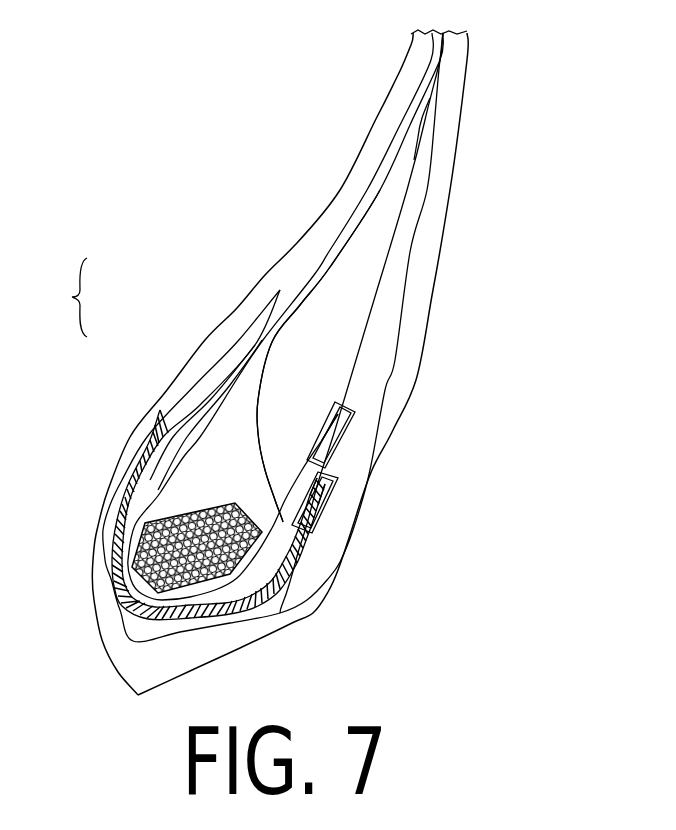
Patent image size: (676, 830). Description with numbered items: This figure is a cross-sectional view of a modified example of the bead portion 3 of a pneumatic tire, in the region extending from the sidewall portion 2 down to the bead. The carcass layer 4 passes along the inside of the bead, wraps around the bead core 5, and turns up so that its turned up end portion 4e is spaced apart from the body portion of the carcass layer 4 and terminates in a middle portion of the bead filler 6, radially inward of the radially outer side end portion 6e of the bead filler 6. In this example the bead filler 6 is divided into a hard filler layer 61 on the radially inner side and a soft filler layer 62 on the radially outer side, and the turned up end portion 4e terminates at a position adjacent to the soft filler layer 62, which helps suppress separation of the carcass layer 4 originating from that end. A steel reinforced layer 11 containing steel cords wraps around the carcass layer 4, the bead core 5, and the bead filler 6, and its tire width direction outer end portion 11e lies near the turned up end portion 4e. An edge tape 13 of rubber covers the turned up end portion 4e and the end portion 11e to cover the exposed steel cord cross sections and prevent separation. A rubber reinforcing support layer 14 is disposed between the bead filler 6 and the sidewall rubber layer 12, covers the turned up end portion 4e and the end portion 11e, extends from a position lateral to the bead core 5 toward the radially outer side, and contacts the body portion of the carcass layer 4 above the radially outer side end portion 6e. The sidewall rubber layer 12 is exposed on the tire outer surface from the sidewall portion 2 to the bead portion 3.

The sidewall portion 2 is at (468, 37).
The bead portion 3 is at (340, 565).
The carcass layer 4 is at (382, 168).
The turned up end portion 4e is at (347, 402).
The bead core 5 is at (175, 523).
The bead filler 6 is at (249, 277).
The hard filler layer 61 is at (243, 387).
The soft filler layer 62 is at (313, 318).
The radially outer side end portion 6e is at (418, 137).
The steel reinforced layer 11 is at (163, 437).
The tire width direction outer end portion 11e is at (332, 471).
The sidewall rubber layer 12 is at (448, 150).
The edge tape 13 is at (343, 438).
The rubber reinforcing support layer 14 is at (407, 252).